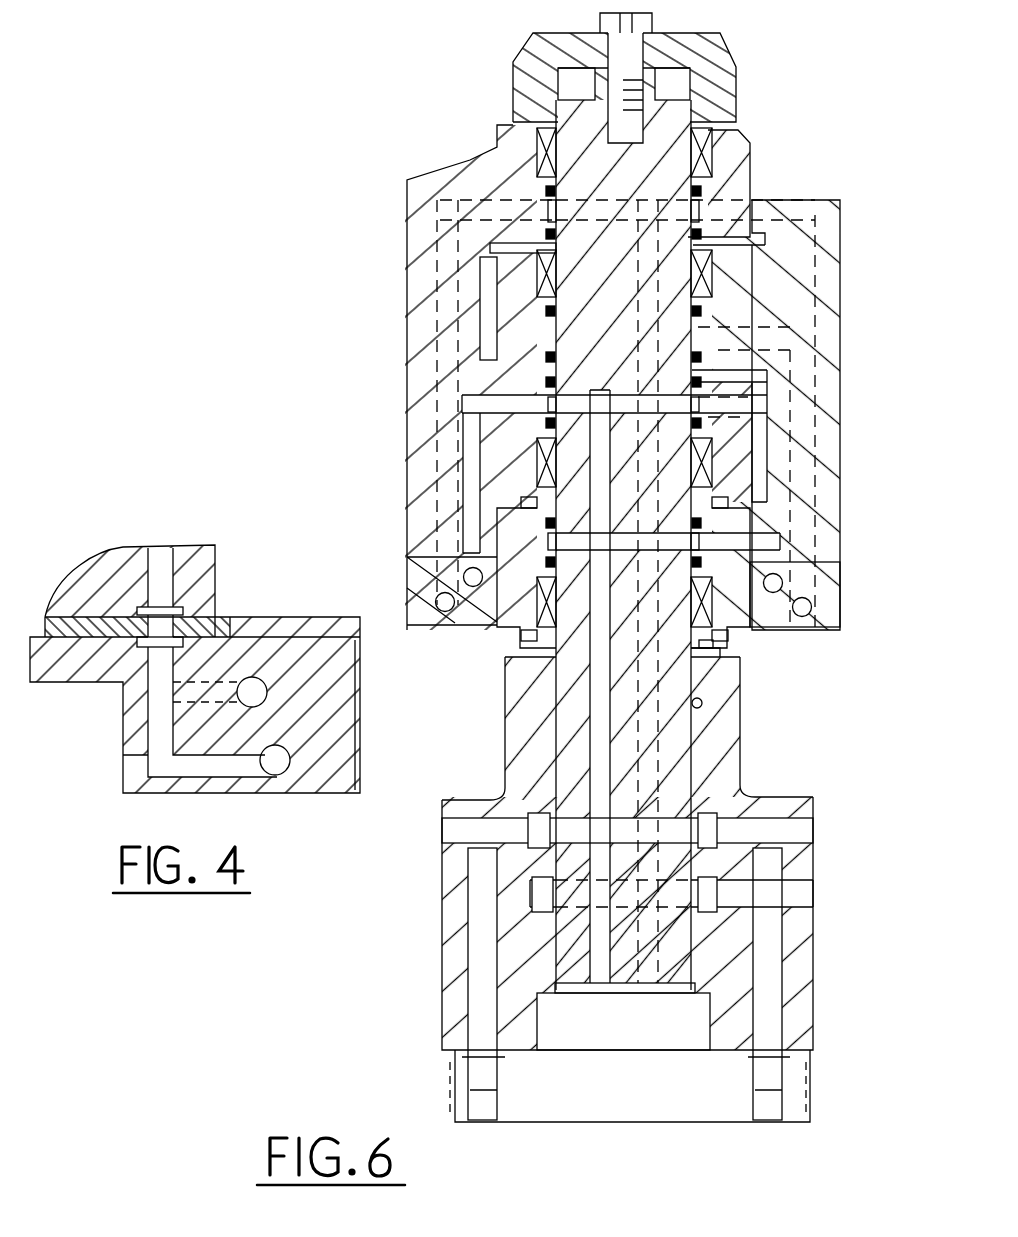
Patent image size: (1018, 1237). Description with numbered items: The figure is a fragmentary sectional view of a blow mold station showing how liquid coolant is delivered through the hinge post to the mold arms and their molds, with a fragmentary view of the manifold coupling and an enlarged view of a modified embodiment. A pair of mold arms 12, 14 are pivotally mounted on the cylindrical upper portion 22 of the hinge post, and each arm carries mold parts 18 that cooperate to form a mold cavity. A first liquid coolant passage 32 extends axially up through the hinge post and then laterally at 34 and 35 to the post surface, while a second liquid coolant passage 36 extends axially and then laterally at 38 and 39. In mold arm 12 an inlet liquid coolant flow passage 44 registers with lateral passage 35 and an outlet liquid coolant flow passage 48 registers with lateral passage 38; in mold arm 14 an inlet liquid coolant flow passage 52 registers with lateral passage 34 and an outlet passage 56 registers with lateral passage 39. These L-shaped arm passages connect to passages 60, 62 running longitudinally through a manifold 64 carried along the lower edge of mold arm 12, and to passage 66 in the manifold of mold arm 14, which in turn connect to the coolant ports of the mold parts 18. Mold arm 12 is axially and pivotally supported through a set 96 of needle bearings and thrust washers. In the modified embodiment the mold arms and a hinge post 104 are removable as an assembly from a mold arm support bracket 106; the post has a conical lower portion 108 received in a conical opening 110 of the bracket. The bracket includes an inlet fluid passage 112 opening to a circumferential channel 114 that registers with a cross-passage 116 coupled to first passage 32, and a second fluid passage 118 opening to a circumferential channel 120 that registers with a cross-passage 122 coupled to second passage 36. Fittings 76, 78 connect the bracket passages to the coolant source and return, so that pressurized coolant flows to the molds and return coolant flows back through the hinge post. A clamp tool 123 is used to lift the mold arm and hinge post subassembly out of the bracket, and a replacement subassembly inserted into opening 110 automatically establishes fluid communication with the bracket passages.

In FIG. 6, the mold arm 12 is at (848, 248).
In FIG. 6, the mold arm 14 is at (400, 300).
In FIG. 4, the mold part 18 is at (195, 560).
In FIG. 6, the cylindrical upper portion 22 is at (678, 152).
In FIG. 6, the first liquid coolant passage 32 is at (595, 745).
In FIG. 6, the lateral passage 34 is at (620, 397).
In FIG. 6, the lateral passage 35 is at (647, 550).
In FIG. 6, the second liquid coolant passage 36 is at (637, 712).
In FIG. 6, the lateral passage 38 is at (578, 323).
In FIG. 6, the lateral passage 39 is at (578, 207).
In FIG. 6, the inlet liquid coolant flow passage 44 is at (772, 540).
In FIG. 6, the outlet liquid coolant flow passage 48 is at (820, 396).
In FIG. 6, the inlet liquid coolant flow passage 52 is at (537, 406).
In FIG. 6, the outlet passage 56 is at (402, 350).
In FIG. 4, the passage 60 is at (258, 683).
In FIG. 4, the passage 62 is at (278, 768).
In FIG. 6, the manifold 64 is at (835, 596).
In FIG. 4, the manifold 64 is at (342, 688).
In FIG. 6, the passage 66 is at (406, 574).
In FIG. 6, the fitting 76 is at (472, 1072).
In FIG. 6, the fitting 78 is at (788, 1078).
In FIG. 6, the set of needle bearings and thrust washers 96 is at (730, 649).
In FIG. 6, the hinge post 104 is at (712, 670).
In FIG. 6, the mold arm support bracket 106 is at (790, 780).
In FIG. 6, the conical lower portion 108 is at (694, 785).
In FIG. 6, the conical opening 110 is at (720, 710).
In FIG. 6, the inlet fluid passage 112 is at (478, 913).
In FIG. 6, the circumferential channel 114 is at (533, 833).
In FIG. 6, the cross-passage 116 is at (568, 826).
In FIG. 6, the second fluid passage 118 is at (787, 890).
In FIG. 6, the circumferential channel 120 is at (740, 852).
In FIG. 6, the cross-passage 122 is at (618, 987).
In FIG. 6, the clamp tool 123 is at (712, 48).